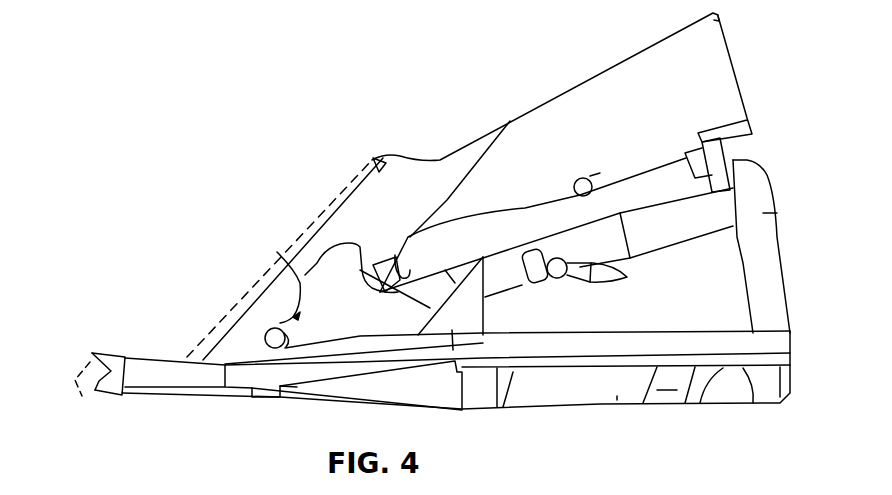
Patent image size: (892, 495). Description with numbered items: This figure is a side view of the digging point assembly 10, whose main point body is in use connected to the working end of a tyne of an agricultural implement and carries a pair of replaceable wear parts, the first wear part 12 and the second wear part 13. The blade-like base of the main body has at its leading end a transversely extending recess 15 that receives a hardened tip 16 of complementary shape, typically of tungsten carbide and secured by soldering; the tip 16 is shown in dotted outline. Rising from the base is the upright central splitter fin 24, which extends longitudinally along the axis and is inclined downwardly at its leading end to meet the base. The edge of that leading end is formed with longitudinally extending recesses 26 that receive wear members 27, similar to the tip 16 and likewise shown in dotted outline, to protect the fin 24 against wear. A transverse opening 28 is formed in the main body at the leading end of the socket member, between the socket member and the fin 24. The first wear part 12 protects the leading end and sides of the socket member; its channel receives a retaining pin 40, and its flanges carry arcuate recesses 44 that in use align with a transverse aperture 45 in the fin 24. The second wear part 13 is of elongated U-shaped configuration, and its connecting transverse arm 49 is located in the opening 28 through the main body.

The digging point assembly 10 is at (266, 97).
The first wear part 12 is at (327, 341).
The second wear part 13 is at (530, 208).
The transversely extending recess 15 is at (90, 355).
The hardened tip 16 is at (78, 392).
The central splitter fin 24 is at (725, 49).
The longitudinally extending recesses 26 is at (327, 218).
The wear members 27 is at (343, 192).
The transverse opening 28 is at (395, 255).
The retaining pin 40 is at (372, 266).
The arcuate recesses 44 is at (288, 252).
The transverse aperture 45 is at (265, 330).
The connecting transverse arm 49 is at (407, 273).